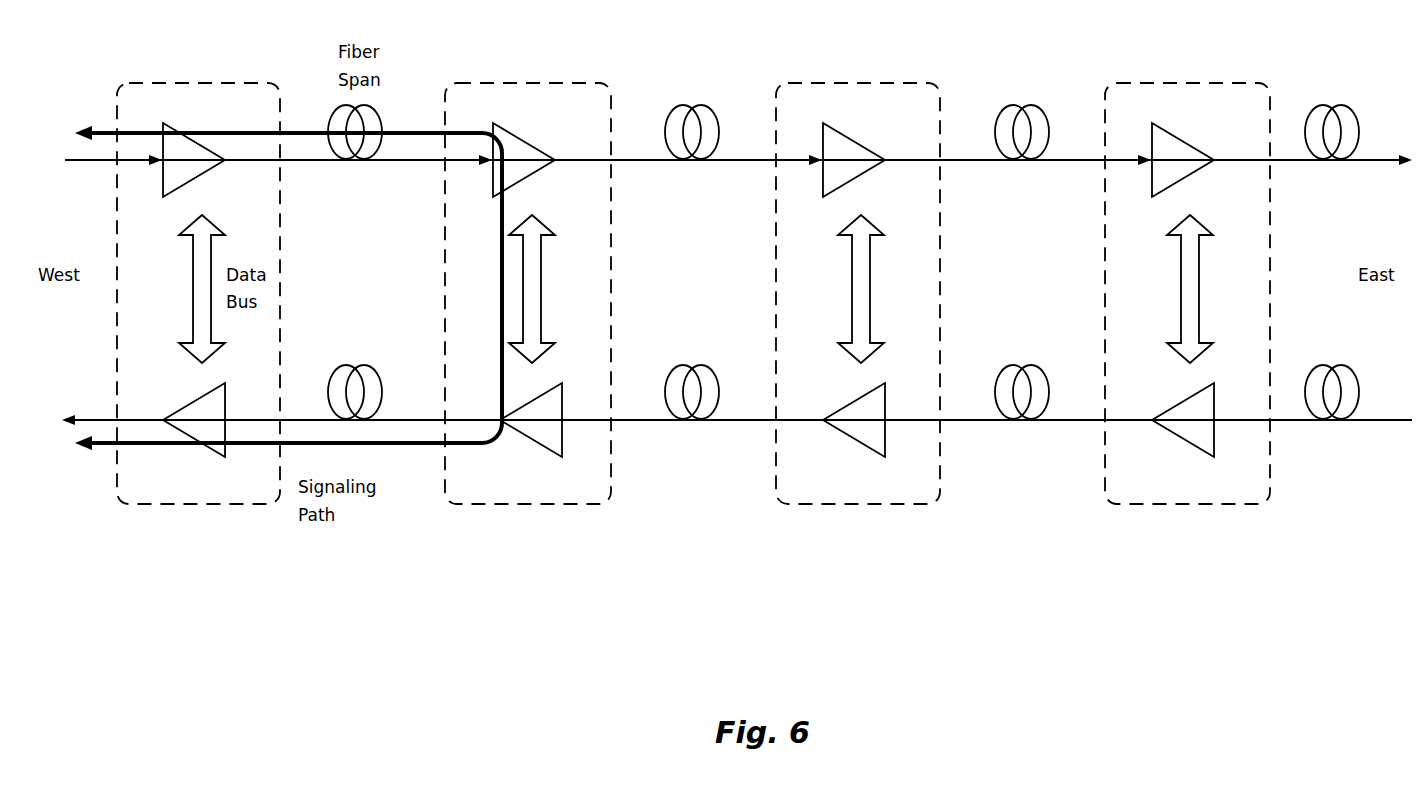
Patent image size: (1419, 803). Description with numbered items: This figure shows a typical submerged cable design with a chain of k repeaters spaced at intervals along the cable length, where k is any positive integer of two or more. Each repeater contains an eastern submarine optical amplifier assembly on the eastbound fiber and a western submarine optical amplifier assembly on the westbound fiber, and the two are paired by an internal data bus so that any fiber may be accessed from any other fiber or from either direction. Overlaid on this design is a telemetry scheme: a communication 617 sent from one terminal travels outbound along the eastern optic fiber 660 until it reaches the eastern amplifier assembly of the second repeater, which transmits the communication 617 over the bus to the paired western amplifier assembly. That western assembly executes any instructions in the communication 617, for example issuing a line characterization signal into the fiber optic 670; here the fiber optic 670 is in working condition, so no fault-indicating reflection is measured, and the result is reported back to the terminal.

The communication 617 is at (423, 130).
The eastern optic fiber 660 is at (96, 162).
The fiber optic 670 is at (95, 418).